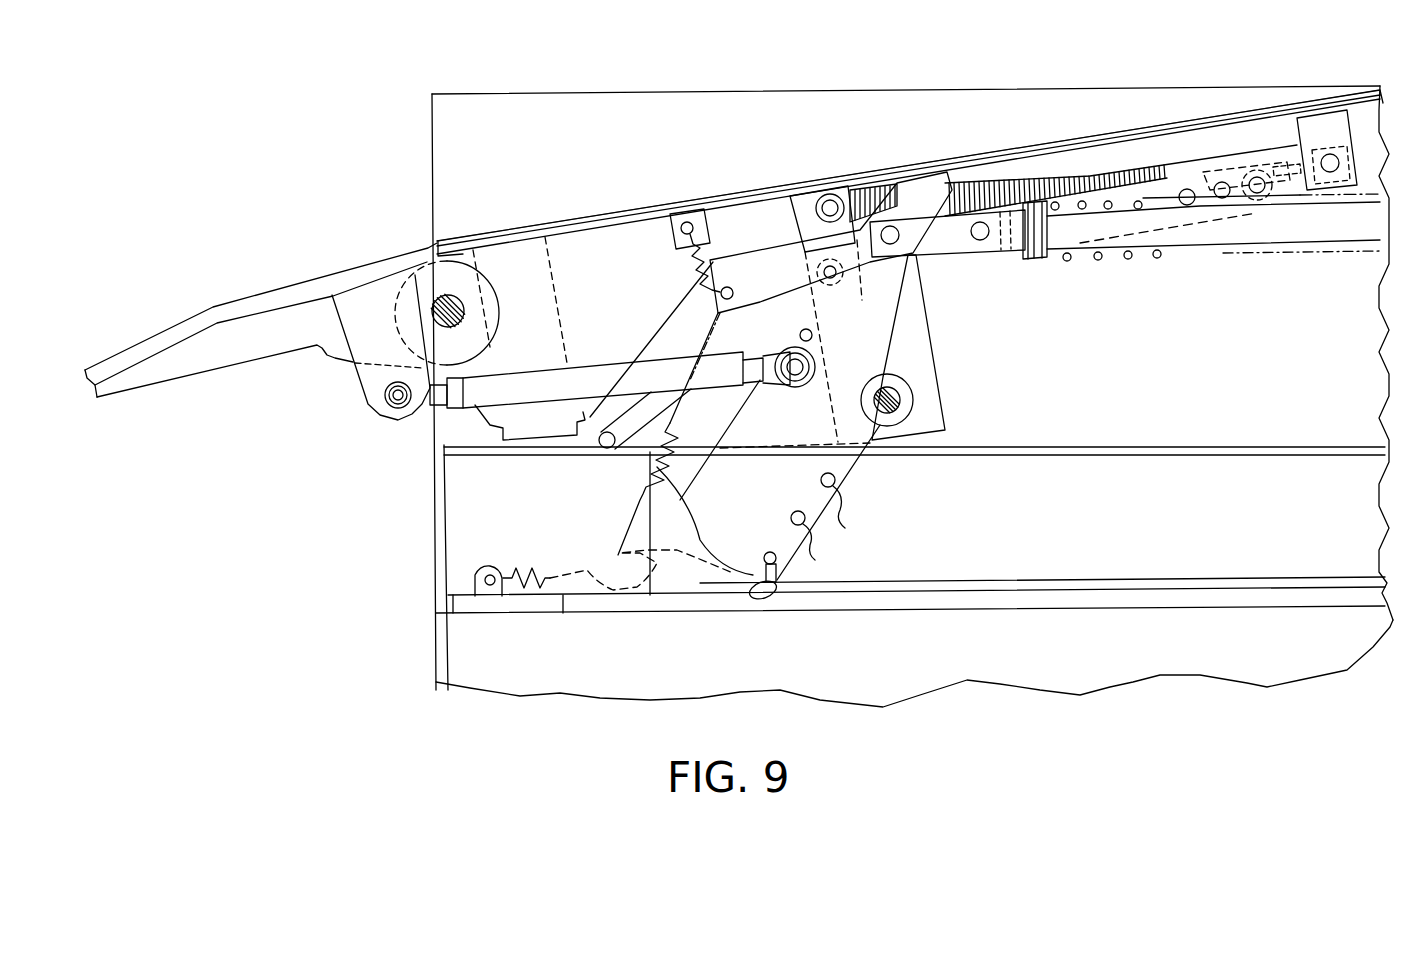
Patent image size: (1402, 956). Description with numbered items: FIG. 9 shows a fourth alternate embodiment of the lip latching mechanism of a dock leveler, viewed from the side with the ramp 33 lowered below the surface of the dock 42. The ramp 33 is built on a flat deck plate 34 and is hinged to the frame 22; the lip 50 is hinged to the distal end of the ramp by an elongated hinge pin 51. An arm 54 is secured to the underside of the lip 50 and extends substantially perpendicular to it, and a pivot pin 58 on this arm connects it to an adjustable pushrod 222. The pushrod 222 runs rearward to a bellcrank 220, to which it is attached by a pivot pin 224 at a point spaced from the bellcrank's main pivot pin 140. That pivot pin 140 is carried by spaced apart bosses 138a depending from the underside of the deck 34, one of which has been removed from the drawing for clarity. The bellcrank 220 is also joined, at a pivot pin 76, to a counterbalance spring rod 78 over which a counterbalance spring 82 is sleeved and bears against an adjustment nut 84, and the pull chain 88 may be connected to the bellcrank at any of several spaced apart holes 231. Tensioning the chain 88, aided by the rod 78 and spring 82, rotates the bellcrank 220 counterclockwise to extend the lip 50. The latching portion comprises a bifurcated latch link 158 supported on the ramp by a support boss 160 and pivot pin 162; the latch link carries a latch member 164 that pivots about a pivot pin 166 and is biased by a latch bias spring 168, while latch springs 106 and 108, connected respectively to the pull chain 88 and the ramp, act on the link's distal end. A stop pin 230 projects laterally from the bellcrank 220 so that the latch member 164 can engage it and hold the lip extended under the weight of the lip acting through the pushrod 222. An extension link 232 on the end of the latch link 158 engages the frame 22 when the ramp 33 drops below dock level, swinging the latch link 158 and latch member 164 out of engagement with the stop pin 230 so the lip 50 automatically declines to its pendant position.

The frame 22 is at (1292, 436).
The dock leveler ramp 33 is at (700, 185).
The deck plate 34 is at (757, 165).
The dock 42 is at (497, 93).
The lip 50 is at (268, 300).
The hinge pin 51 is at (455, 298).
The arm 54 is at (357, 382).
The pivot pin 58 is at (398, 408).
The pivot pin 76 is at (890, 247).
The counterbalance spring rod 78 is at (1210, 240).
The counterbalance spring 82 is at (1105, 260).
The adjustment nut 84 is at (1040, 255).
The pull chain 88 is at (684, 586).
The latch bias spring 106 is at (686, 492).
The latch bias spring 108 is at (697, 257).
The boss 138a is at (940, 390).
The pivot pin 140 is at (893, 415).
The latch link 158 is at (1187, 182).
The support boss 160 is at (1362, 118).
The pivot pin 162 is at (1322, 153).
The latch member 164 is at (838, 140).
The pivot pin 166 is at (820, 275).
The latch bias spring 168 is at (982, 176).
The bellcrank 220 is at (853, 488).
The adjustable pushrod 222 is at (527, 390).
The pivot pin 224 is at (790, 380).
The stop pin 230 is at (815, 338).
The holes 231 is at (810, 533).
The extension link 232 is at (620, 440).